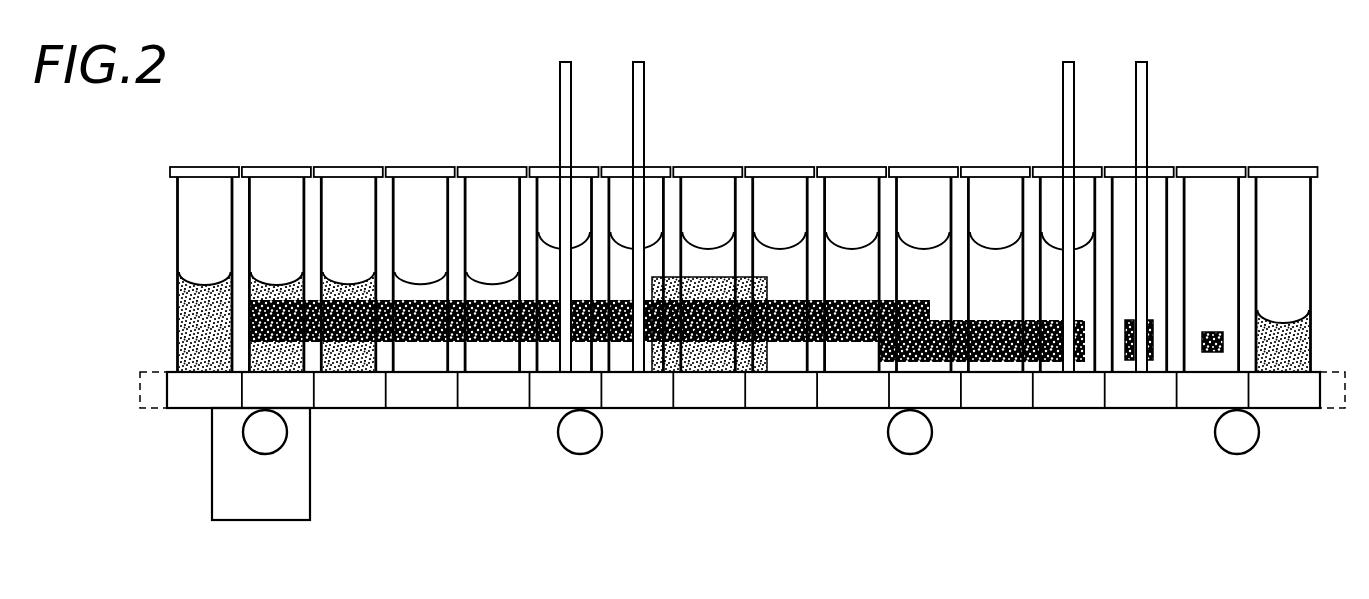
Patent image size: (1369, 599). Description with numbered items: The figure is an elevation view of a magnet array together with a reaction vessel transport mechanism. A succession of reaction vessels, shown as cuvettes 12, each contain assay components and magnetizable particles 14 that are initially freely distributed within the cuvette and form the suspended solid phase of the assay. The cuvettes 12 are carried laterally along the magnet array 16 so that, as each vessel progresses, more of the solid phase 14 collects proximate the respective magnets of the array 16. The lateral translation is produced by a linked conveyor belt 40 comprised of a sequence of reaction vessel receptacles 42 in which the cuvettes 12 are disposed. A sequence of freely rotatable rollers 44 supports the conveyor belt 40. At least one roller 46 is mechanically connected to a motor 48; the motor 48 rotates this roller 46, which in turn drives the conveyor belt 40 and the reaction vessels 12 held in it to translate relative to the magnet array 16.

The cuvette 12 is at (177, 229).
The magnetizable particles 14 is at (177, 318).
The magnet array 16 is at (283, 300).
The linked conveyor belt 40 is at (485, 406).
The reaction vessel receptacle 42 is at (777, 399).
The freely rotatable roller 44 is at (905, 445).
The roller 46 is at (257, 435).
The motor 48 is at (238, 496).